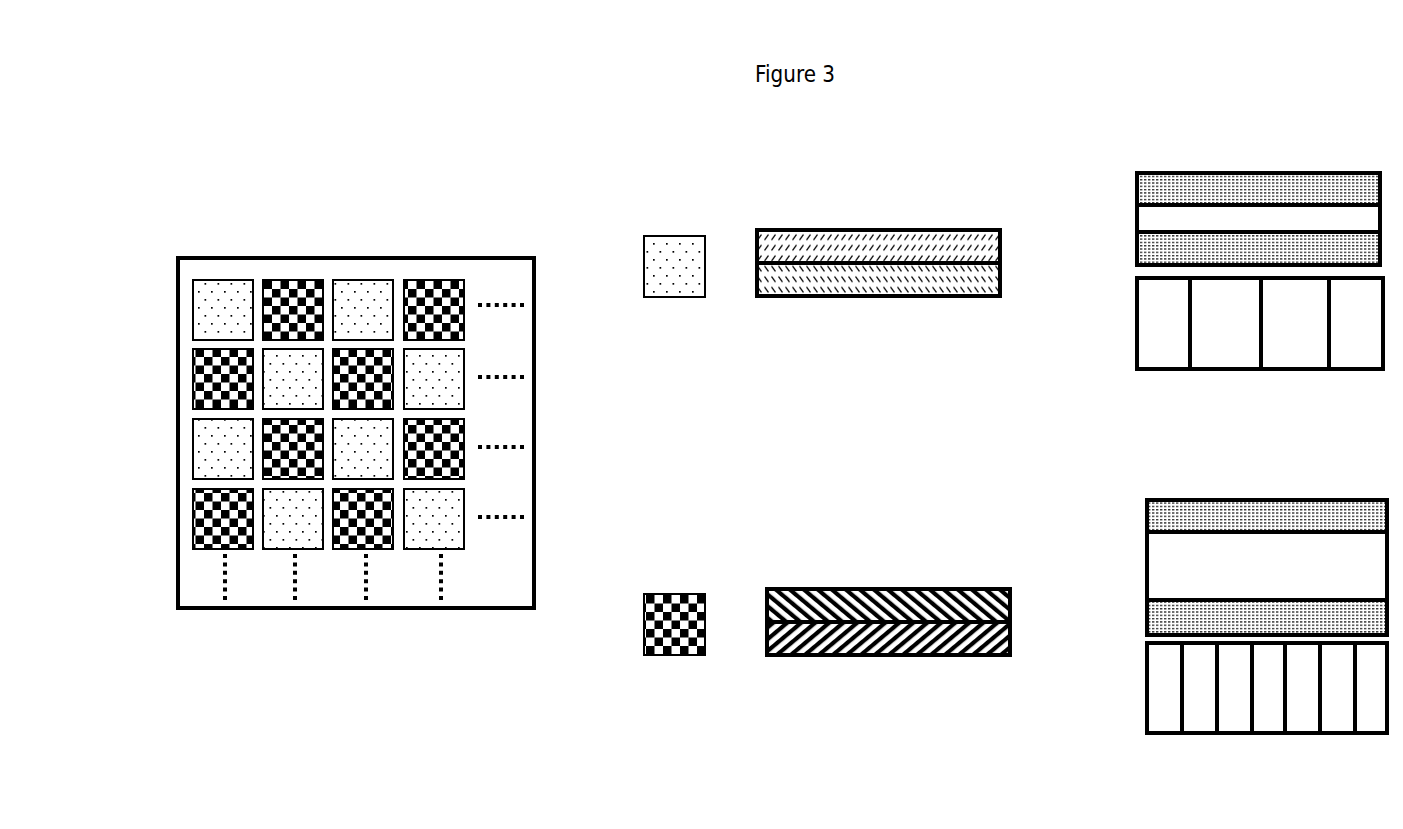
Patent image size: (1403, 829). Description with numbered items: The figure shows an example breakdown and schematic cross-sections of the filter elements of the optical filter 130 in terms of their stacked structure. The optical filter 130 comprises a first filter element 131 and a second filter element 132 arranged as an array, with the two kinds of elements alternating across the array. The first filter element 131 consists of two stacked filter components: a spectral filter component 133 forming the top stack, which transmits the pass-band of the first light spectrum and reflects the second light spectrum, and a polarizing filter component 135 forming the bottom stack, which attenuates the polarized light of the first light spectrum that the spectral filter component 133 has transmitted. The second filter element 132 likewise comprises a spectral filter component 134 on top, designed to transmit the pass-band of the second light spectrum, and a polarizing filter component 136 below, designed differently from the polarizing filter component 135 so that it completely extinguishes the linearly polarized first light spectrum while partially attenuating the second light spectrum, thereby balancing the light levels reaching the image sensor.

The optical filter 130 is at (340, 630).
The first filter element 131 is at (638, 261).
The second filter element 132 is at (203, 373).
The spectral filter component 133 is at (1121, 199).
The spectral filter component 134 is at (1121, 549).
The polarizing filter component 135 is at (1133, 336).
The polarizing filter component 136 is at (1137, 703).